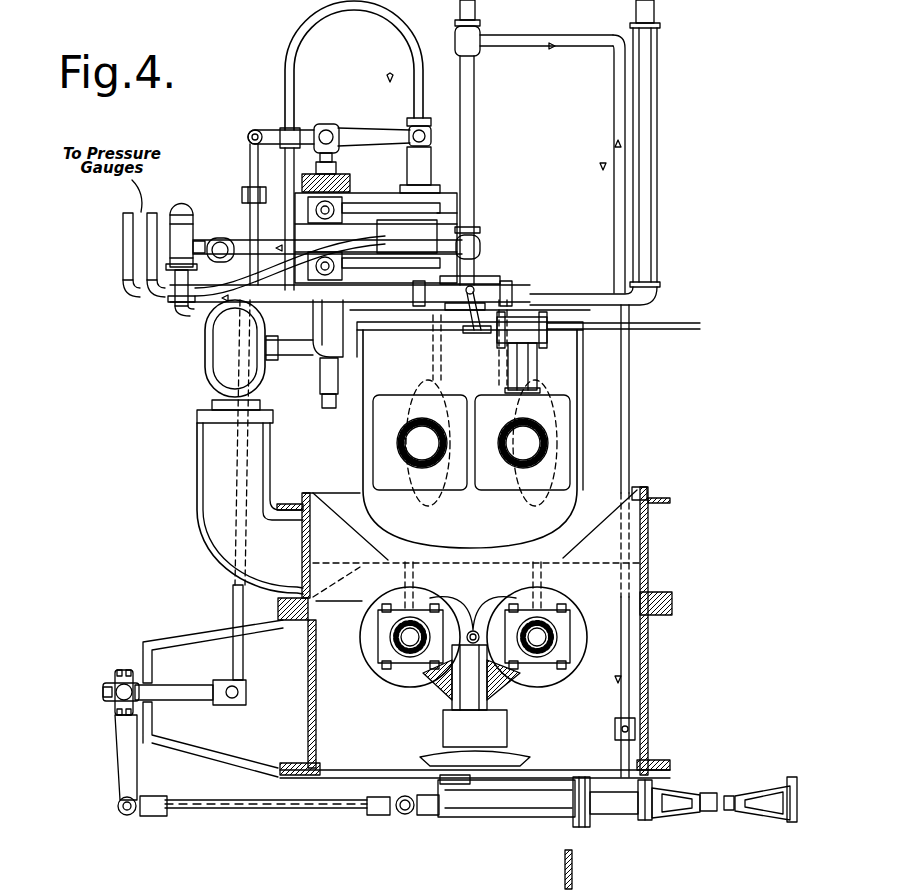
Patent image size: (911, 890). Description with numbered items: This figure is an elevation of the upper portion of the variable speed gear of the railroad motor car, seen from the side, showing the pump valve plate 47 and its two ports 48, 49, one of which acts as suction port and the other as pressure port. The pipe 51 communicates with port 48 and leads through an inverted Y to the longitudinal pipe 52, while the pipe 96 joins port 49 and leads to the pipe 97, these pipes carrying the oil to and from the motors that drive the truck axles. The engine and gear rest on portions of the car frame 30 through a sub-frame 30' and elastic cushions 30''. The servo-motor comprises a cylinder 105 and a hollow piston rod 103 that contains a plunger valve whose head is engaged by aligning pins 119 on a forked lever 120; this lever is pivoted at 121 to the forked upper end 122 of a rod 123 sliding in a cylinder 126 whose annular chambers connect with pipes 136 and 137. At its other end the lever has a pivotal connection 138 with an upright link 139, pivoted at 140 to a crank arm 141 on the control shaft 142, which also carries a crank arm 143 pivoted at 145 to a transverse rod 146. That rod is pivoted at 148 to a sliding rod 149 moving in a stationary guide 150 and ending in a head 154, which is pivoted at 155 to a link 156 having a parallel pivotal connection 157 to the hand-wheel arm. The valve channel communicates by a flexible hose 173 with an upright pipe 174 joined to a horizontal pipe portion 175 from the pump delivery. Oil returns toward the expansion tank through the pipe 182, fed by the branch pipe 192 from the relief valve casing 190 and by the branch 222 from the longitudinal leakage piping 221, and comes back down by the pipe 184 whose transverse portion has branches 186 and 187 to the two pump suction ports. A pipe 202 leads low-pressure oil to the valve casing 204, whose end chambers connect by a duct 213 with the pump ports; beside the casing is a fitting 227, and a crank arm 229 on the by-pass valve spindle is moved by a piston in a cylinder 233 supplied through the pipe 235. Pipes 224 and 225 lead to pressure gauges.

The hose or flexible pipe 173 is at (291, 48).
The aligning pins 119 is at (431, 137).
The piston rod 103 is at (417, 174).
The forked lever 120 is at (370, 128).
The pivotal connection 121 is at (327, 128).
The forked upper end 122 is at (336, 154).
The pivotal connection 138 is at (253, 130).
The rod 123 is at (316, 165).
The upright pipe 174 is at (290, 181).
The cylinder 126 is at (314, 226).
The pipe 136 is at (360, 206).
The pipe 137 is at (360, 262).
The cylinder 105 is at (417, 233).
The pipe 182 is at (477, 174).
The cylinder 233 is at (530, 315).
The pipe 184 is at (646, 201).
The branch 222 is at (630, 418).
The longitudinal piping 221 is at (636, 734).
The pipe 235 is at (684, 331).
The pipe 227 is at (503, 291).
The valve casing 204 is at (484, 283).
The crank arm 229 is at (471, 335).
The end plate or valve plate 47 is at (530, 392).
The pipe 51 is at (410, 428).
The pipe 96 is at (512, 426).
The port 48 is at (445, 506).
The port 49 is at (523, 500).
The duct 213 is at (432, 352).
The sub-frame 30' is at (483, 523).
The elastic cushions 30'' is at (496, 601).
The car frame 30 is at (485, 632).
The longitudinal pipe 52 is at (417, 624).
The pipe 97 is at (548, 624).
The pipe 225 is at (127, 216).
The pipe 224 is at (153, 213).
The casing 190 is at (181, 251).
The branch pipe 192 is at (208, 257).
The horizontal pipe portion 175 is at (275, 299).
The branch 187 is at (276, 360).
The pipe 202 is at (235, 348).
The branch 186 is at (236, 359).
The upright link 139 is at (233, 603).
The pivotal connection 140 is at (247, 693).
The crank arm 141 is at (190, 688).
The control shaft 142 is at (114, 703).
The crank arm 143 is at (132, 777).
The pivotal connection 145 is at (121, 814).
The rod 146 is at (258, 809).
The pivotal connection 148 is at (394, 812).
The sliding rod 149 is at (430, 815).
The stationary guide 150 is at (530, 810).
The head 154 is at (630, 815).
The pivotal connection 155 is at (647, 822).
The link 156 is at (700, 795).
The pivotal connection 157 is at (761, 790).